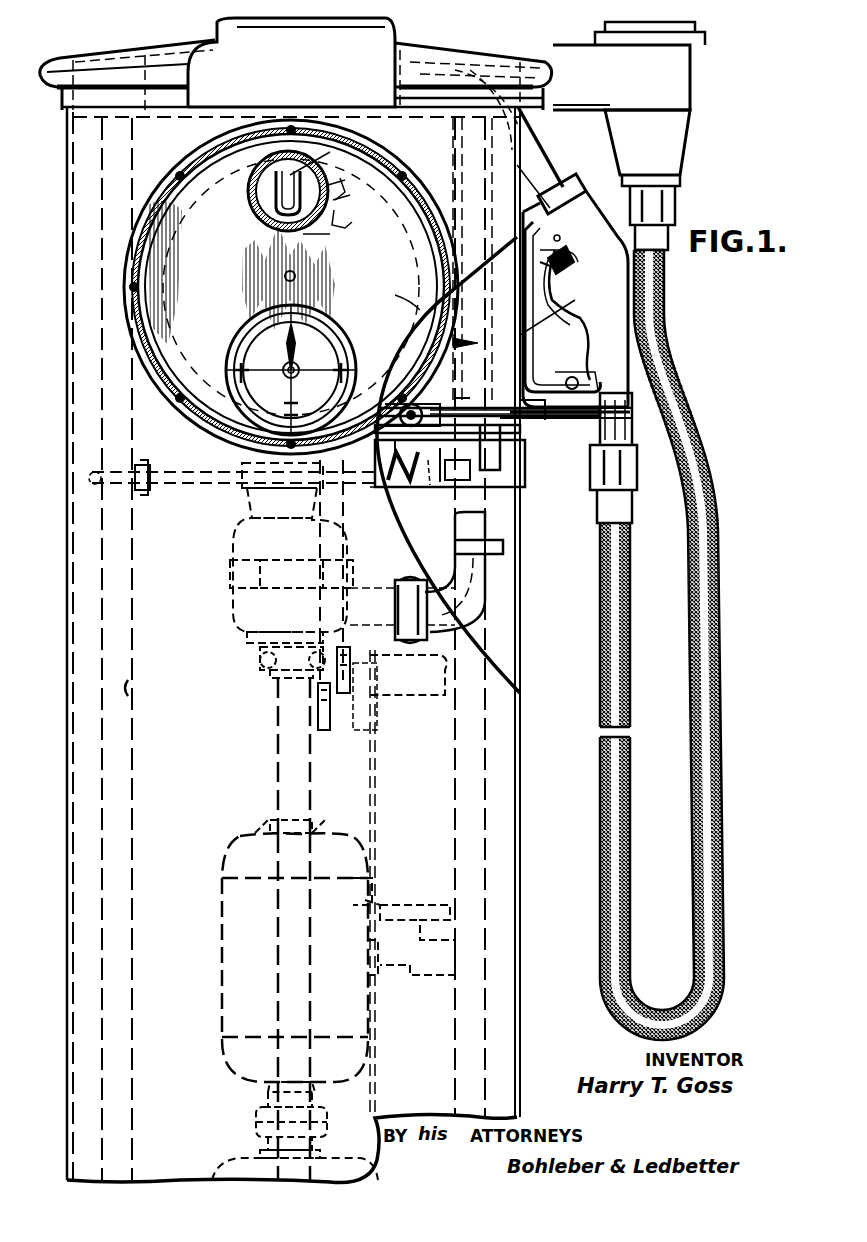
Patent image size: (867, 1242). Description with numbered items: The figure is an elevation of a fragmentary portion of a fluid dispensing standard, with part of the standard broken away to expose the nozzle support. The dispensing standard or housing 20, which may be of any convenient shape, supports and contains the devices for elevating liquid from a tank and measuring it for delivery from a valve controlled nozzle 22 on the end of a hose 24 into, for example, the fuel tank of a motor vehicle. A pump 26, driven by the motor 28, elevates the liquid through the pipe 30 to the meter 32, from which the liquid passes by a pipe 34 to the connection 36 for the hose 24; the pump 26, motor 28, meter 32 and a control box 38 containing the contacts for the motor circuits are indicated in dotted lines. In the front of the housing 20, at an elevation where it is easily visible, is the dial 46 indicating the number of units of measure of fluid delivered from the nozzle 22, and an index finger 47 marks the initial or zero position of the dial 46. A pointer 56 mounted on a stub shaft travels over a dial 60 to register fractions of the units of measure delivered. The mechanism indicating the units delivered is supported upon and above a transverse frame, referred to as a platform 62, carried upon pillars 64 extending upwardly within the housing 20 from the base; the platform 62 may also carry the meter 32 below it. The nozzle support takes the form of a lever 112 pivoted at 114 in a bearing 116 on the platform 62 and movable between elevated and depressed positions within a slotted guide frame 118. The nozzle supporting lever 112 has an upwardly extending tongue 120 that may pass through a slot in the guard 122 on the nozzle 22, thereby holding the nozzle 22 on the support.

The dispensing standard or housing 20 is at (72, 362).
The valve controlled nozzle 22 is at (550, 172).
The hose 24 is at (720, 512).
The pump 26 is at (238, 1160).
The motor 28 is at (245, 965).
The pipe 30 is at (280, 725).
The meter 32 is at (240, 538).
The pipe 34 is at (493, 563).
The connection 36 is at (680, 143).
The control box 38 is at (400, 680).
The dial 46 is at (372, 185).
The index finger 47 is at (330, 168).
The pointer 56 is at (320, 332).
The dial 60 is at (270, 350).
The transverse frame or platform 62 is at (175, 478).
The pillars 64 is at (130, 688).
The lever 112 is at (553, 418).
The pivot 114 is at (418, 405).
The bearing 116 is at (415, 482).
The slotted guide frame 118 is at (520, 370).
The tongue 120 is at (580, 378).
The guard 122 is at (578, 292).